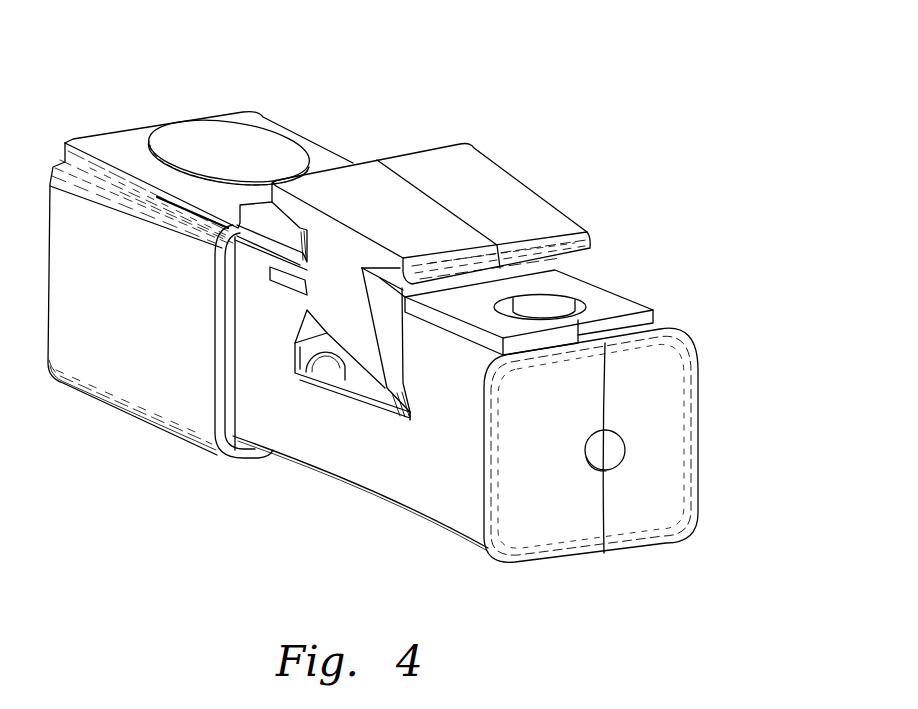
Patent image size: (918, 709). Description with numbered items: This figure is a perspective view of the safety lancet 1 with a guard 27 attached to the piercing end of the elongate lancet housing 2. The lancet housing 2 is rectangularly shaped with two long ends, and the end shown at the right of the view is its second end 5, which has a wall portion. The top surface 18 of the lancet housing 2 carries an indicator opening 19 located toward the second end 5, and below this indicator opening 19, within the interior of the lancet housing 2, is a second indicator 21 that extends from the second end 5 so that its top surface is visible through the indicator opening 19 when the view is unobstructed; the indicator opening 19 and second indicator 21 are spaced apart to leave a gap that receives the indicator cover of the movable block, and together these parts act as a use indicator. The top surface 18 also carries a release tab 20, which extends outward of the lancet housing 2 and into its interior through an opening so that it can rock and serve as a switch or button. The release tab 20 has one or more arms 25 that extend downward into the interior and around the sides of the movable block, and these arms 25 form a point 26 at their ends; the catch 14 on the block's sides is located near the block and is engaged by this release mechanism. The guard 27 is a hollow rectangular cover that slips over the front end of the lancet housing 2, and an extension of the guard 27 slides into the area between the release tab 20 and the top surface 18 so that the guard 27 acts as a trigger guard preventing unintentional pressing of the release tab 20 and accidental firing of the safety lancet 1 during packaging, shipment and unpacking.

The safety lancet 1 is at (437, 85).
The lancet housing 2 is at (452, 453).
The second end 5 is at (647, 413).
The catch 14 is at (320, 362).
The top surface 18 is at (627, 310).
The indicator opening 19 is at (550, 313).
The release tab 20 is at (483, 188).
The second indicator 21 is at (552, 320).
The arms 25 is at (345, 302).
The point 26 is at (377, 375).
The guard 27 is at (118, 152).